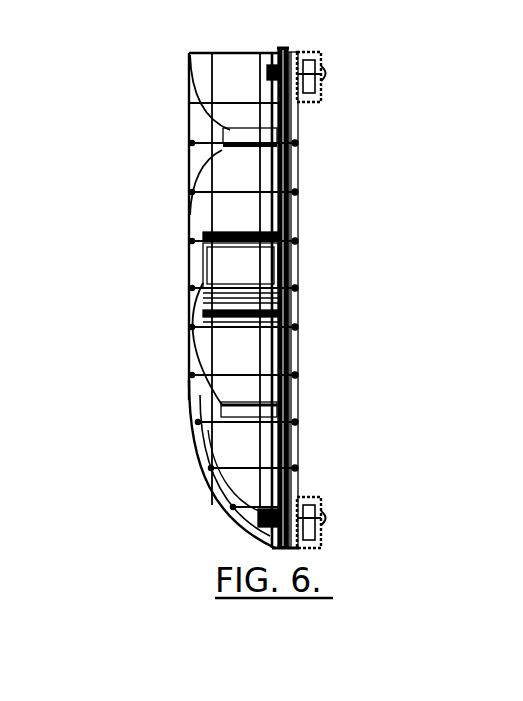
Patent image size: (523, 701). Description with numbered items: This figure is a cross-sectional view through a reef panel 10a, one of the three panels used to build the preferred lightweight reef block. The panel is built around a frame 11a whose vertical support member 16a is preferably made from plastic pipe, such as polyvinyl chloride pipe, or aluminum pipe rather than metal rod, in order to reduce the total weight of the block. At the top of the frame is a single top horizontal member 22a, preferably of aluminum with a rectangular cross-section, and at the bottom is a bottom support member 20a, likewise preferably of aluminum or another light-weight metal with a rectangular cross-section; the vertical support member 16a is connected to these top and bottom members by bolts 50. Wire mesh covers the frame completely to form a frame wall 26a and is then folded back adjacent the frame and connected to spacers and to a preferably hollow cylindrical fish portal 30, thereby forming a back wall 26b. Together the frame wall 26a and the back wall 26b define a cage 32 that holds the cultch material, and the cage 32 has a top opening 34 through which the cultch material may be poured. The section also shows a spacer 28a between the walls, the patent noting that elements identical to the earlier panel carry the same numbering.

The reef panel 10a is at (156, 180).
The frame 11a is at (312, 143).
The vertical support member 16a is at (285, 225).
The bottom support member 20a is at (305, 497).
The top horizontal member 22a is at (309, 52).
The frame wall 26a is at (297, 192).
The back wall 26b is at (180, 212).
The shelf 28a is at (242, 407).
The fish portal 30 is at (247, 276).
The cage 32 is at (160, 370).
The top opening 34 is at (232, 42).
The bolt 50 is at (329, 74).